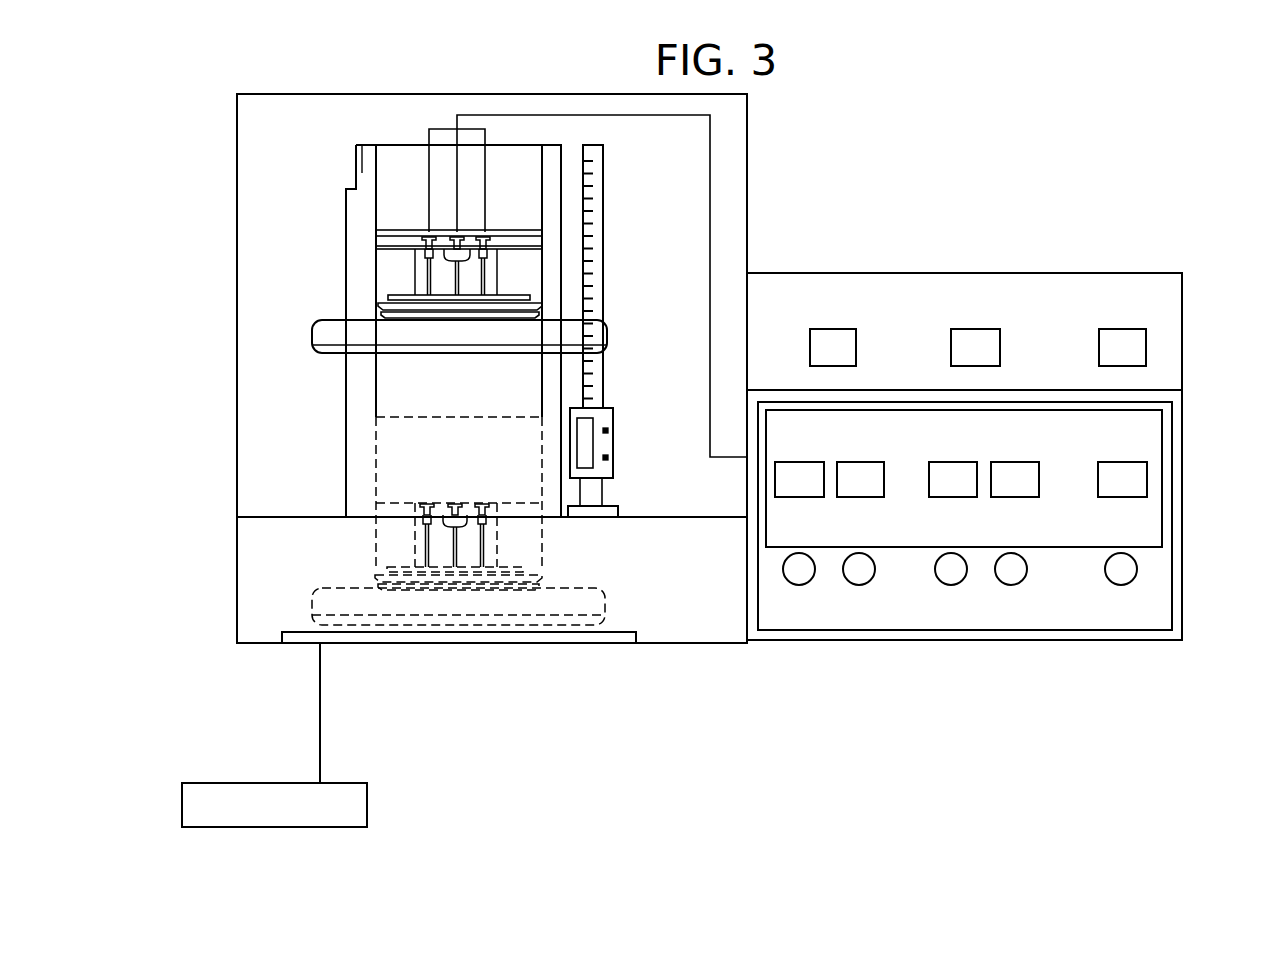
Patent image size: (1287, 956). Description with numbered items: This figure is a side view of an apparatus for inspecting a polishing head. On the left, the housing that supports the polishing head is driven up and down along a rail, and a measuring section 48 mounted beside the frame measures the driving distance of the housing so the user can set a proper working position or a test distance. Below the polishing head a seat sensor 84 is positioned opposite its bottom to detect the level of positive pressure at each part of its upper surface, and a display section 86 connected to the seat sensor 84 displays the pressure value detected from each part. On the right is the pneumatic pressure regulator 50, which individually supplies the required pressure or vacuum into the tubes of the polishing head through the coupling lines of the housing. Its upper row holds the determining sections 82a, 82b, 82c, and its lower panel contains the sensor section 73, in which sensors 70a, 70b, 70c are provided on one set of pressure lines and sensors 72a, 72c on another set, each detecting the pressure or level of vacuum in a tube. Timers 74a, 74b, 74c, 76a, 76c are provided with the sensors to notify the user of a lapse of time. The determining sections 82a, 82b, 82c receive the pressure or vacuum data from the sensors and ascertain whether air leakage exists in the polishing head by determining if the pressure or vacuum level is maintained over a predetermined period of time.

The measuring section 48 is at (605, 510).
The pneumatic pressure regulator 50 is at (1005, 457).
The sensor section 73 is at (1015, 478).
The sensor 70a is at (944, 454).
The sensor 70b is at (1113, 454).
The sensor 70c is at (794, 454).
The sensor 72a is at (1003, 454).
The sensor 72c is at (848, 454).
The timer 74a is at (943, 577).
The timer 74b is at (1113, 577).
The timer 74c is at (791, 577).
The timer 76a is at (1003, 577).
The timer 76c is at (851, 577).
The determining section 82a is at (966, 321).
The determining section 82b is at (1115, 321).
The determining section 82c is at (820, 321).
The seat sensor 84 is at (295, 637).
The display section 86 is at (185, 775).